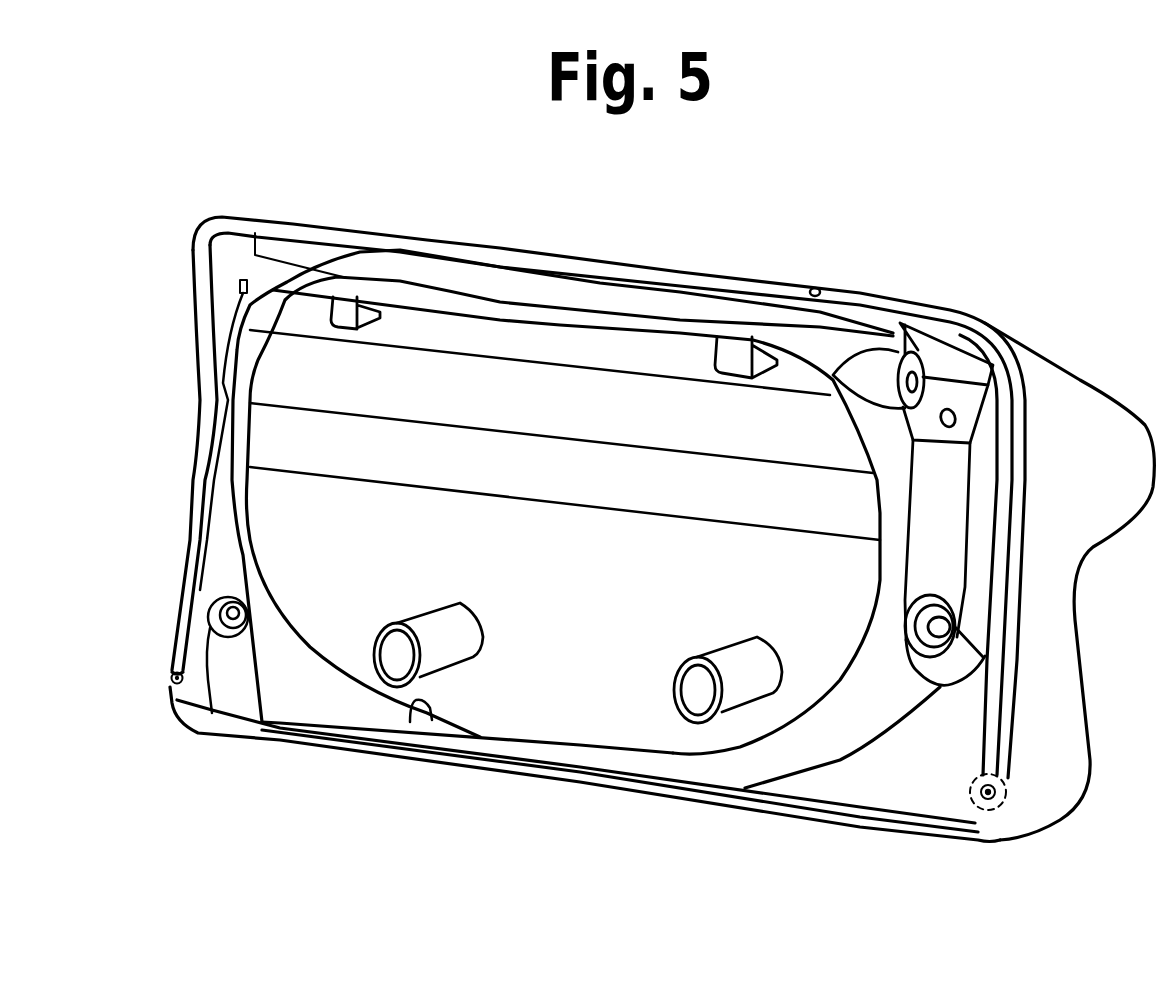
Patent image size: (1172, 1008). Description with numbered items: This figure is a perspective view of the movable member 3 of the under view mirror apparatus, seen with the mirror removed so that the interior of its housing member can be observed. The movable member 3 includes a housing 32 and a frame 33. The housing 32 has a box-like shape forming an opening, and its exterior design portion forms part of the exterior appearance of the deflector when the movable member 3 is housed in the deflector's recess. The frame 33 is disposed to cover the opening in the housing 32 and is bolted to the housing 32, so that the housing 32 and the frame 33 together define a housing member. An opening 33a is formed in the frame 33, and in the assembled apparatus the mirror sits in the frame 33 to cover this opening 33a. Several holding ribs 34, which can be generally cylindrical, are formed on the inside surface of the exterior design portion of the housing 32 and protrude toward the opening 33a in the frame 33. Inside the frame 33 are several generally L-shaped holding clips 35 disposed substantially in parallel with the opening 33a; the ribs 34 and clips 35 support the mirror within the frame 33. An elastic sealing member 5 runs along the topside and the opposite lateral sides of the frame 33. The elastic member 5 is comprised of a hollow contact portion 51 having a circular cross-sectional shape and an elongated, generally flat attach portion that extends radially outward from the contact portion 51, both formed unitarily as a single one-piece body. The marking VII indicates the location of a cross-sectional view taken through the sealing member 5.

The movable member 3 is at (170, 262).
The elastic sealing member 5 is at (1013, 712).
The housing 32 is at (1048, 345).
The frame 33 is at (845, 770).
The opening 33a is at (432, 720).
The holding ribs 34 is at (452, 648).
The holding clips 35 is at (350, 300).
The contact portion 51 is at (822, 292).
The section line VII is at (995, 810).